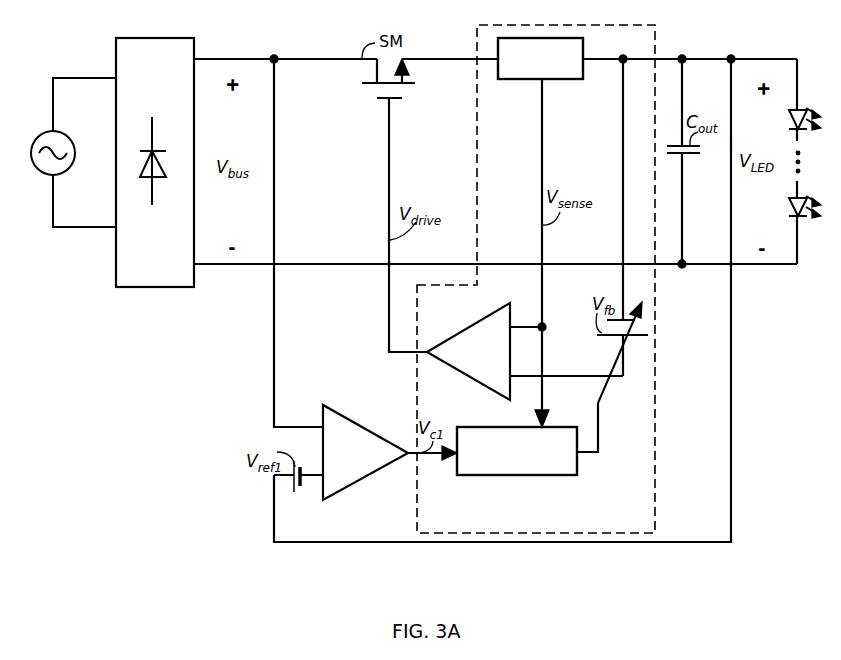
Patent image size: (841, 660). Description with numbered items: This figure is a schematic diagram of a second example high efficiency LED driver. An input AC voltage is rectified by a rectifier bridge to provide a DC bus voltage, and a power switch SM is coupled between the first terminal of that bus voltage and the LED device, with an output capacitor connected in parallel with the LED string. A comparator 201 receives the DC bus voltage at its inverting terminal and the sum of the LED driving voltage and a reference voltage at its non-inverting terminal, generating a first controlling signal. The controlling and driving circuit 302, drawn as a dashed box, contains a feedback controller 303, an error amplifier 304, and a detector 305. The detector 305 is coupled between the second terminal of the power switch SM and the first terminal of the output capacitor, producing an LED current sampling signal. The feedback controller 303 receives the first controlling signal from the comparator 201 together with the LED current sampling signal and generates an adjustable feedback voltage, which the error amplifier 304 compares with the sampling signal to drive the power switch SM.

The comparator 201 is at (390, 452).
The controlling and driving circuit 302 is at (536, 279).
The feedback controller 303 is at (517, 451).
The error amplifier 304 is at (525, 351).
The detector 305 is at (540, 58).